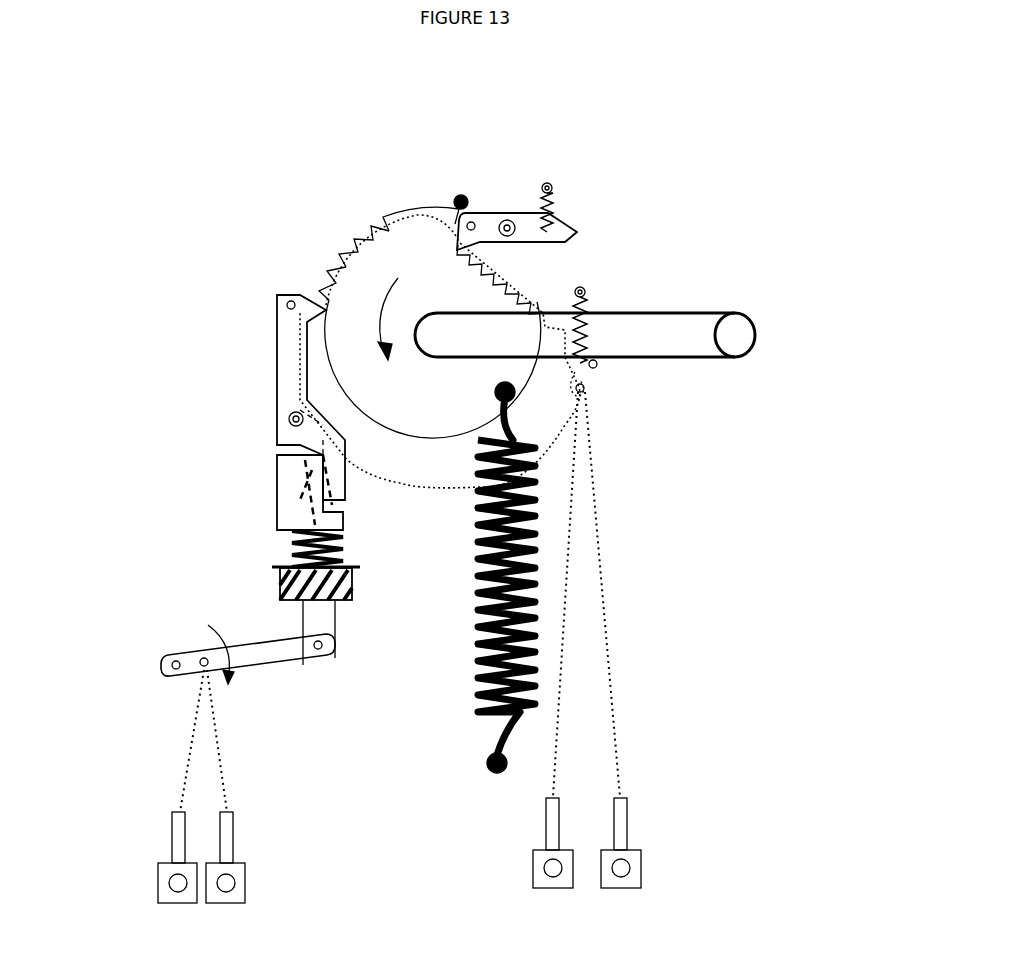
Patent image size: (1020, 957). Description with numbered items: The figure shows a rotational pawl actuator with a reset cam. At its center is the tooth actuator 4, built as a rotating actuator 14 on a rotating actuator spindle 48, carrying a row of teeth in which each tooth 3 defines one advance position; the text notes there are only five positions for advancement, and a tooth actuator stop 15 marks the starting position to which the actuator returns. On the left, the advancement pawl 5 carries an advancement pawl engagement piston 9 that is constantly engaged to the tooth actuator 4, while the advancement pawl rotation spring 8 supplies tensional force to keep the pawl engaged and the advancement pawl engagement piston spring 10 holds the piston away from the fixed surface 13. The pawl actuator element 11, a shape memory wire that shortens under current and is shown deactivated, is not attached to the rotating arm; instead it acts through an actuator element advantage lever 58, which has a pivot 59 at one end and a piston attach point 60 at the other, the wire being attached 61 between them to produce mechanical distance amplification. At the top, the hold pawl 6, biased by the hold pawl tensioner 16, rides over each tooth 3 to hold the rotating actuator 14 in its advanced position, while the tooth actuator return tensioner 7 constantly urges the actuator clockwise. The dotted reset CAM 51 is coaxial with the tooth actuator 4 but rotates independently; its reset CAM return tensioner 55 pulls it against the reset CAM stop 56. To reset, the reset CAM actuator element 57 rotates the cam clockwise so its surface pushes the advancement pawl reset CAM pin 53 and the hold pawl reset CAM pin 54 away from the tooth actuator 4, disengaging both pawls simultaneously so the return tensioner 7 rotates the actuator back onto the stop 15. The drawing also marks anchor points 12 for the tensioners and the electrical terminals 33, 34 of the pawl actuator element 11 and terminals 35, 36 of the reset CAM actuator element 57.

The tooth 3 is at (312, 272).
The tooth actuator 4 is at (388, 215).
The advancement pawl 5 is at (277, 366).
The hold pawl 6 is at (604, 240).
The tooth actuator return tensioner 7 is at (525, 578).
The advancement pawl rotation spring 8 is at (300, 460).
The advancement pawl engagement piston 9 is at (300, 503).
The advancement pawl engagement piston spring 10 is at (292, 555).
The pawl actuator element 11 is at (188, 760).
The anchor point 12 is at (577, 288).
The fixed surface 13 is at (348, 578).
The rotating actuator 14 is at (433, 358).
The tooth actuator stop 15 is at (455, 201).
The hold pawl tensioner 16 is at (555, 200).
The terminal N1+ 33 is at (157, 868).
The terminal N1- 34 is at (247, 875).
The terminal N2+ 35 is at (533, 864).
The terminal N2- 36 is at (641, 868).
The rotating actuator spindle 48 is at (742, 333).
The reset CAM 51 is at (410, 484).
The advancement pawl reset CAM pin 53 is at (285, 307).
The hold pawl reset CAM pin 54 is at (471, 221).
The reset CAM return tensioner 55 is at (590, 336).
The reset CAM stop 56 is at (598, 367).
The reset CAM actuator element 57 is at (614, 752).
The actuator element advantage lever 58 is at (258, 656).
The pivot 59 is at (170, 664).
The piston attach point 60 is at (324, 650).
The attachment 61 is at (202, 657).